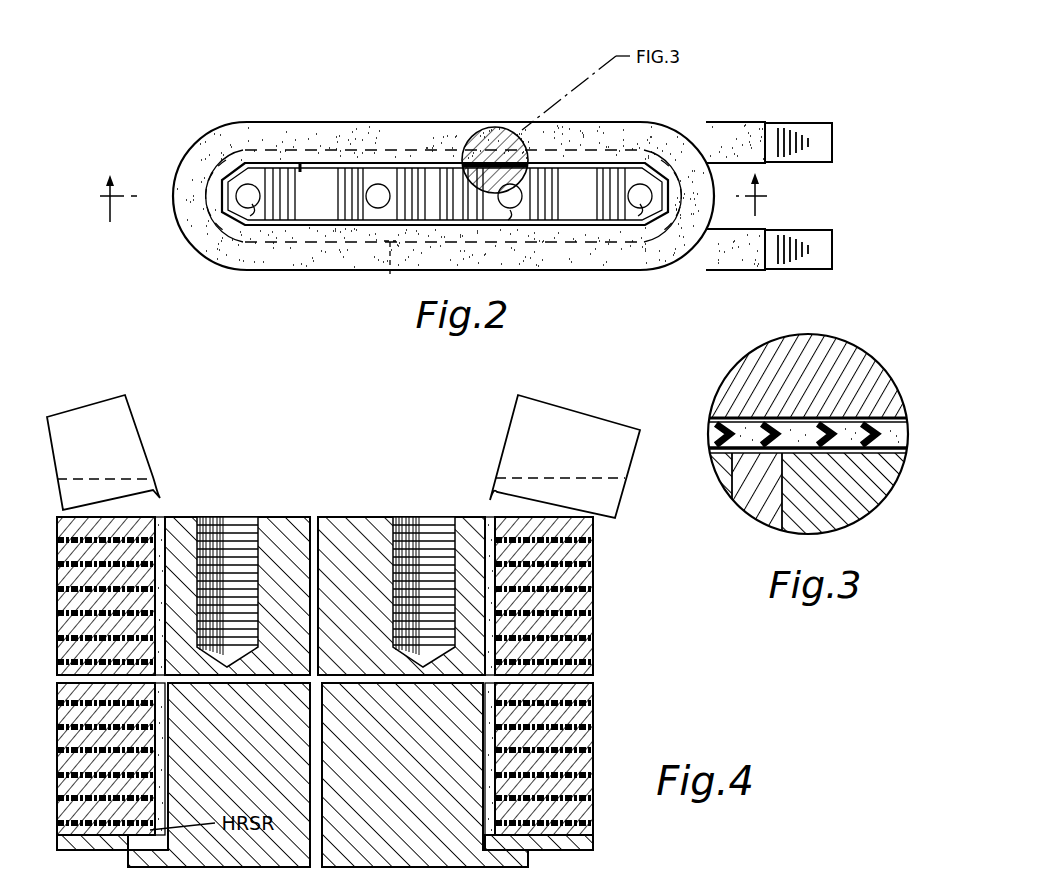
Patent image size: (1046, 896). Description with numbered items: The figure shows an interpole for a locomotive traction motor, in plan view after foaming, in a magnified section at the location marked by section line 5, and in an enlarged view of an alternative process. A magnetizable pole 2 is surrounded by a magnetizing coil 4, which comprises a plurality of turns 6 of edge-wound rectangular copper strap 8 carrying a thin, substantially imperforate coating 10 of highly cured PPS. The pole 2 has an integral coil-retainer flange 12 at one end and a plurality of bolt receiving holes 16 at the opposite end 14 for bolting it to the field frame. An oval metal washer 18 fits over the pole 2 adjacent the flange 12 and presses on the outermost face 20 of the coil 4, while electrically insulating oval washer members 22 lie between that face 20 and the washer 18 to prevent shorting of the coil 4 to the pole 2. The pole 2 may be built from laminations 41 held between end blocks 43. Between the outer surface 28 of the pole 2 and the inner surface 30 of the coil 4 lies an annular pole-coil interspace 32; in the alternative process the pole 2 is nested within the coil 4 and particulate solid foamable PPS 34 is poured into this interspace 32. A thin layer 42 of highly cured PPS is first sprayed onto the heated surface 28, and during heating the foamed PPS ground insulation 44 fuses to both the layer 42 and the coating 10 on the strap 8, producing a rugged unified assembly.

In FIG. 2, the magnetizable pole 2 is at (300, 162).
In FIG. 3, the magnetizable pole 2 is at (870, 517).
In FIG. 4, the magnetizable pole 2 is at (336, 514).
In FIG. 2, the magnetizing coil 4 is at (224, 118).
In FIG. 4, the magnetizing coil 4 is at (604, 639).
In FIG. 2, the section line 5 is at (435, 197).
In FIG. 2, the turns 6 is at (432, 128).
In FIG. 4, the turns 6 is at (594, 570).
In FIG. 2, the edge-wound rectangular copper strap 8 is at (816, 236).
In FIG. 3, the edge-wound rectangular copper strap 8 is at (838, 356).
In FIG. 4, the edge-wound rectangular copper strap 8 is at (581, 746).
In FIG. 2, the PPS coating 10 is at (766, 122).
In FIG. 3, the PPS coating 10 is at (893, 408).
In FIG. 4, the PPS coating 10 is at (594, 700).
In FIG. 2, the coil-retainer flange 12 is at (386, 278).
In FIG. 4, the coil-retainer flange 12 is at (530, 860).
In FIG. 2, the opposite end of pole 14 is at (318, 181).
In FIG. 4, the opposite end of pole 14 is at (370, 517).
In FIG. 2, the bolt receiving holes 16 is at (366, 201).
In FIG. 4, the bolt receiving holes 16 is at (250, 530).
In FIG. 4, the oval metal washer 18 is at (571, 853).
In FIG. 4, the outermost face of coil 20 is at (487, 853).
In FIG. 4, the electrically insulating oval washer members 22 is at (594, 842).
In FIG. 2, the outer surface of pole 28 is at (395, 164).
In FIG. 4, the outer surface of pole 28 is at (163, 752).
In FIG. 2, the inner surface of coil 30 is at (513, 219).
In FIG. 4, the inner surface of coil 30 is at (159, 795).
In FIG. 4, the annular pole-coil interspace 32 is at (487, 520).
In FIG. 4, the particulate solid foamable PPS 34 is at (161, 497).
In FIG. 2, the laminations 41 is at (481, 164).
In FIG. 3, the laminations 41 is at (745, 480).
In FIG. 3, the PPS layer 42 is at (713, 430).
In FIG. 4, the PPS layer 42 is at (176, 548).
In FIG. 2, the end blocks 43 is at (243, 213).
In FIG. 2, the foamed PPS ground insulation 44 is at (348, 224).
In FIG. 3, the foamed PPS ground insulation 44 is at (890, 438).